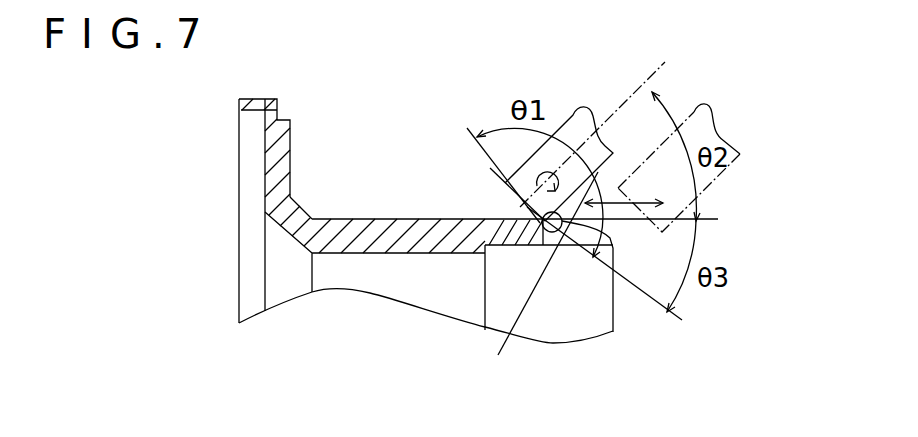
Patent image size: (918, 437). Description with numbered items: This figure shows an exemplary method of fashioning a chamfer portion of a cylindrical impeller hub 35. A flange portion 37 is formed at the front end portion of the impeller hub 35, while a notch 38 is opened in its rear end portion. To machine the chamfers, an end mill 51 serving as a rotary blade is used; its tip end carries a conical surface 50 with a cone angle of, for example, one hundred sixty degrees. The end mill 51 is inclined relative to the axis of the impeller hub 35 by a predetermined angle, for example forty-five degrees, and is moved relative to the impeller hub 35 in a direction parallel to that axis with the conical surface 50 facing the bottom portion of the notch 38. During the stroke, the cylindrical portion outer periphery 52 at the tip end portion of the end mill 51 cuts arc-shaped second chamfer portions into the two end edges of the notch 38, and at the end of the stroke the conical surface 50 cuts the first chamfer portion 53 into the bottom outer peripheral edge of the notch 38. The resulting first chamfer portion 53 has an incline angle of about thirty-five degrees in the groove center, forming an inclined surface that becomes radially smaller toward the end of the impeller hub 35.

The impeller hub 35 is at (393, 212).
The flange portion 37 is at (281, 151).
The notch 38 is at (578, 232).
The conical surface 50 is at (505, 187).
The end mill 51 is at (568, 128).
The cylindrical portion outer periphery 52 is at (518, 165).
The first chamfer portion 53 is at (540, 281).